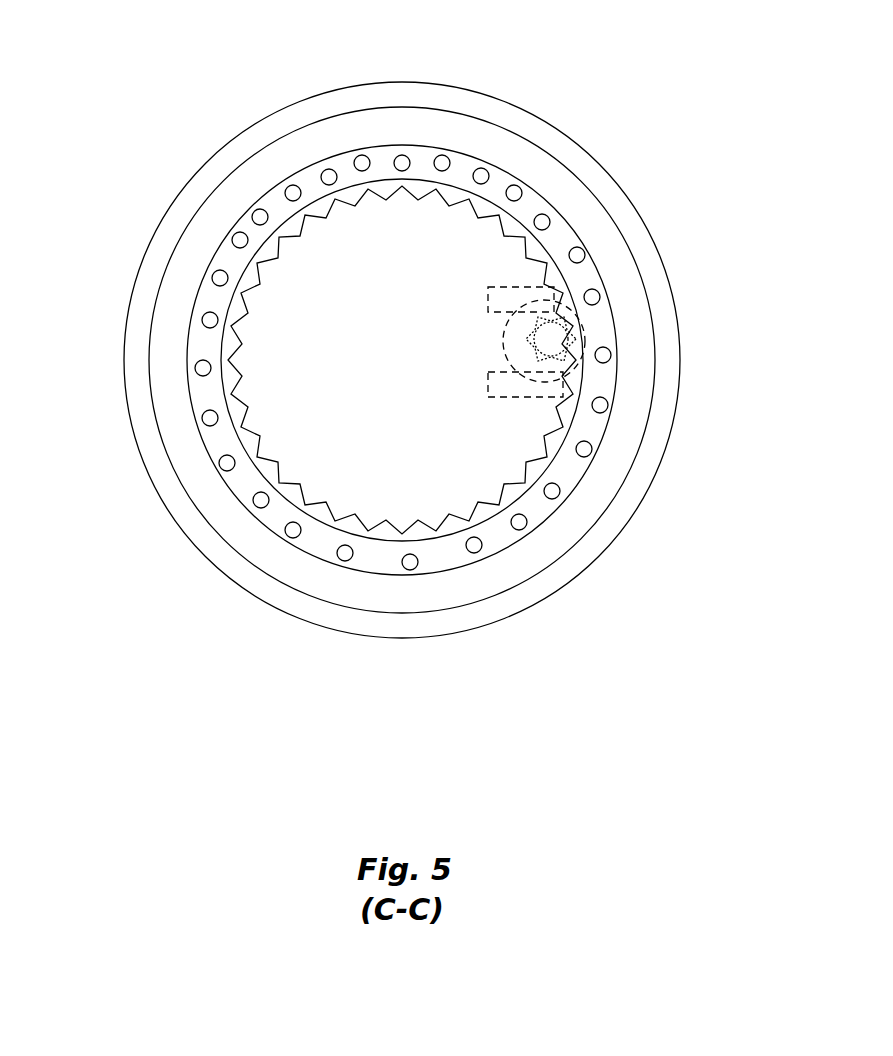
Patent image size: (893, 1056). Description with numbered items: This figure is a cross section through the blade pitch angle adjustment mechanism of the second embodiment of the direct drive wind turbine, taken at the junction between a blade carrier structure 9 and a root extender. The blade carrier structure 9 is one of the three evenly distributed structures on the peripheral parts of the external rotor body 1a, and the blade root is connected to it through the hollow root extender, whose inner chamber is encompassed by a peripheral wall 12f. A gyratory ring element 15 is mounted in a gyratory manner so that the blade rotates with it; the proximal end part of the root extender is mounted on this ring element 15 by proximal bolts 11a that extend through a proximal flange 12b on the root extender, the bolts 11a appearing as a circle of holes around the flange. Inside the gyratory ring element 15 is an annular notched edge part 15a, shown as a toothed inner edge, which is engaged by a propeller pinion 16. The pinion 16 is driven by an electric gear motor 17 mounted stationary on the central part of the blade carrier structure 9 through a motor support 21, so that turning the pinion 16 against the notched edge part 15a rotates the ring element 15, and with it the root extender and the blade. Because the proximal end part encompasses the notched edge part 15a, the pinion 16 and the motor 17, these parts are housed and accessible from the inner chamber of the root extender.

The external rotor body 1a is at (411, 456).
The blade carrier structure 9 is at (582, 561).
The proximal bolts 11a is at (445, 160).
The proximal flange 12b is at (203, 342).
The peripheral wall 12f is at (197, 483).
The gyratory ring element 15 is at (402, 274).
The annular notched edge part 15a is at (240, 352).
The propeller pinion 16 is at (552, 337).
The electric gear motor 17 is at (297, 245).
The motor support 21 is at (502, 293).